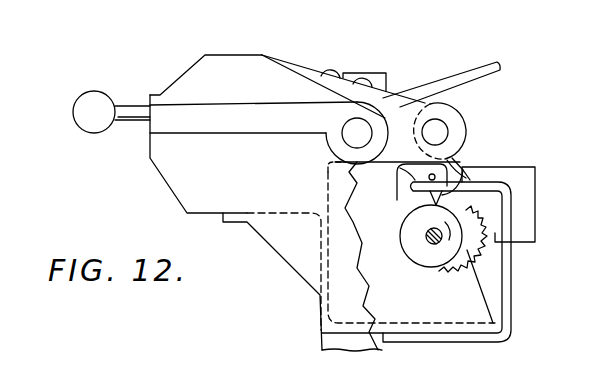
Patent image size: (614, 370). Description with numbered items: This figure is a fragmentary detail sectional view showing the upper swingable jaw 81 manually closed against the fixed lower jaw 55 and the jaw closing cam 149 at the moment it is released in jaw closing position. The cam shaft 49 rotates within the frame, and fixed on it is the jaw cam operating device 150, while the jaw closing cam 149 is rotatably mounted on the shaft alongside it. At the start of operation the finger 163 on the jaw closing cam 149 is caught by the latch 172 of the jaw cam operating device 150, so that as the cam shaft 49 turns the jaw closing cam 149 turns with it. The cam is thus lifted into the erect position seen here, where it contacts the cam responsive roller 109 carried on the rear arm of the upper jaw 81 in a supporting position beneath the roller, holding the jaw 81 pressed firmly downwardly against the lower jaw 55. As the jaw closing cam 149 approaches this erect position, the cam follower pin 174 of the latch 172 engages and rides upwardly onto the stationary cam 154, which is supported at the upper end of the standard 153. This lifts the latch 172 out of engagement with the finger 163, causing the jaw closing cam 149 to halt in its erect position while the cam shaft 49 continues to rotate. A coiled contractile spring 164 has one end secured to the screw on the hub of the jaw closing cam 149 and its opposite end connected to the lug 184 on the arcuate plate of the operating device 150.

The upper swingable jaw 81 is at (238, 70).
The lower jaw 55 is at (192, 187).
The cam responsive roller 109 is at (457, 114).
The cam follower pin 174 is at (462, 152).
The stationary cam 154 is at (465, 168).
The latch 172 is at (408, 172).
The jaw closing cam 149 is at (407, 200).
The finger 163 is at (401, 209).
The cam shaft 49 is at (427, 242).
The jaw cam operating device 150 is at (377, 256).
The lug 184 is at (430, 285).
The coiled contractile spring 164 is at (478, 228).
The standard 153 is at (509, 278).